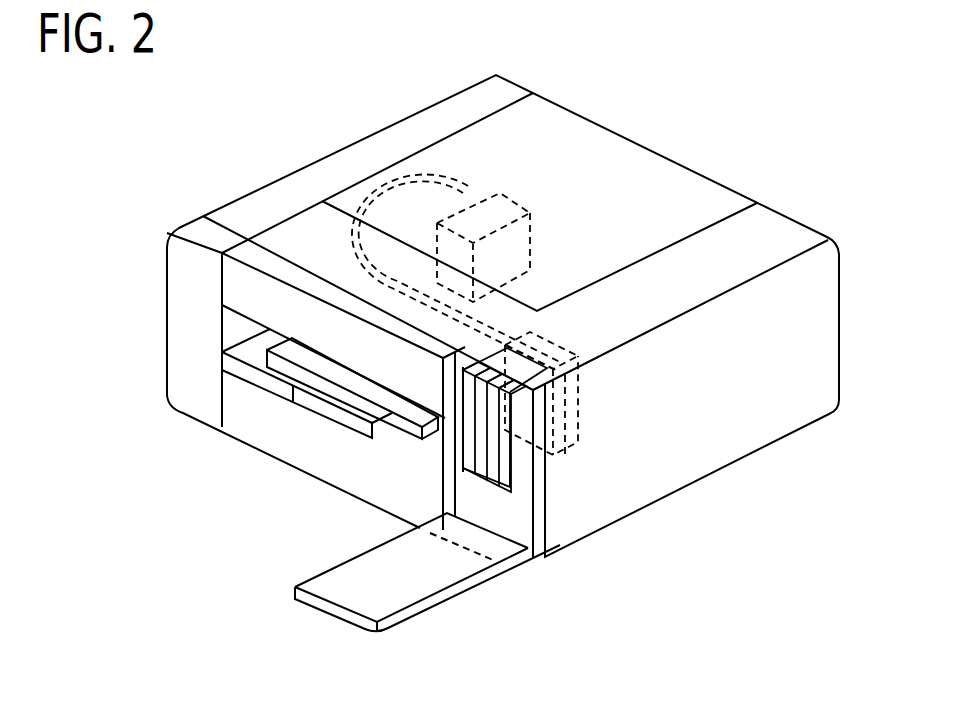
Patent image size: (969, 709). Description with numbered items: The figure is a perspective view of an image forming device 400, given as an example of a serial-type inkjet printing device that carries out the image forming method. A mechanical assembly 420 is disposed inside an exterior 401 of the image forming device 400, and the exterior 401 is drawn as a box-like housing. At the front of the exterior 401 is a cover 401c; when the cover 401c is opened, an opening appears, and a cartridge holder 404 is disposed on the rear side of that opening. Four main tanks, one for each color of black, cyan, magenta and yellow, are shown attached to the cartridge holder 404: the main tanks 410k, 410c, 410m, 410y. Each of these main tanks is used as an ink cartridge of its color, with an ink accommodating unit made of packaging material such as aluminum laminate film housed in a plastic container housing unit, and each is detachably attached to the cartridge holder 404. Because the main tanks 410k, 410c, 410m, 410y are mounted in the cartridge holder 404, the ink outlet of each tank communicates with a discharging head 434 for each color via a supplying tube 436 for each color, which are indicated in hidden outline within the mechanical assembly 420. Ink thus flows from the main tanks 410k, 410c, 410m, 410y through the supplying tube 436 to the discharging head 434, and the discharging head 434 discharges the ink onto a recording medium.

The image forming device 400 is at (759, 96).
The exterior 401 is at (290, 165).
The cover 401c is at (446, 595).
The cartridge holder 404 is at (578, 418).
The main tank for black 410k is at (474, 454).
The main tank for cyan 410c is at (486, 462).
The main tank for magenta 410m is at (498, 470).
The main tank for yellow 410y is at (510, 480).
The mechanical assembly 420 is at (598, 198).
The discharging head 434 is at (503, 195).
The supplying tube 436 is at (398, 180).